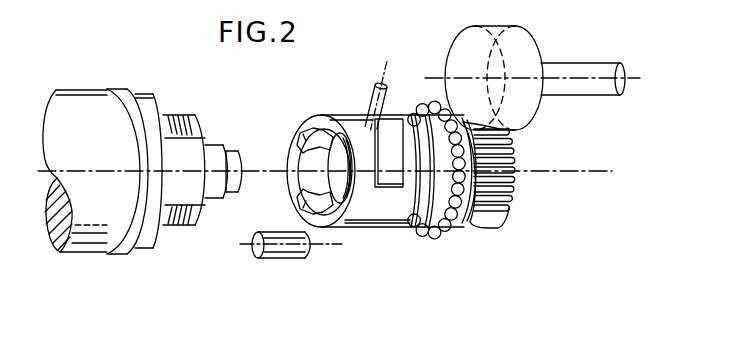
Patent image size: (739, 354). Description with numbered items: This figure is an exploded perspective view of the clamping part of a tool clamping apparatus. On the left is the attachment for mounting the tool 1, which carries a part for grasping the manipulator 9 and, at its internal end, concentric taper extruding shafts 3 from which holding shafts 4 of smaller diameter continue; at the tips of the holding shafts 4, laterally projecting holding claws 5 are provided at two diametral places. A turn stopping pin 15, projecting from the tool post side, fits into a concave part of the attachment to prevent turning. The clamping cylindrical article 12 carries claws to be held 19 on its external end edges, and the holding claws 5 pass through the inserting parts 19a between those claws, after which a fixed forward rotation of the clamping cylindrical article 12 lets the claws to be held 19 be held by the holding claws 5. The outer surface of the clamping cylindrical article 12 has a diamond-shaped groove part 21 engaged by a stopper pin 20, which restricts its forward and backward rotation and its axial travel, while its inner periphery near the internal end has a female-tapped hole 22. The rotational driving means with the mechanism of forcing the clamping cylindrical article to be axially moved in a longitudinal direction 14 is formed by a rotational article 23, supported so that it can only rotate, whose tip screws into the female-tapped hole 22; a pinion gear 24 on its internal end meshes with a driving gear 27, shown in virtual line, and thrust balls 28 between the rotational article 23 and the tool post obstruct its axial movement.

The attachment for mounting the tool 1 is at (107, 208).
The part for grasping the manipulator 9 is at (136, 234).
The taper extruding shafts 3 is at (187, 195).
The holding shafts 4 is at (220, 144).
The holding claws 5 is at (233, 155).
The clamping cylindrical article 12 is at (363, 210).
The turn stopping pin 15 is at (292, 256).
The claws to be held 19 is at (296, 138).
The inserting parts 19a is at (347, 133).
The stopper pin 20 is at (365, 104).
The groove part 21 is at (384, 176).
The female-tapped hole 22 is at (320, 176).
The rotational article 23 is at (415, 229).
The pinion gear 24 is at (514, 181).
The driving gear 27 is at (527, 49).
The thrust balls 28 is at (470, 208).
The rotational driving means with a mechanism of forcing the clamping cylindrical ar 14 is at (503, 230).